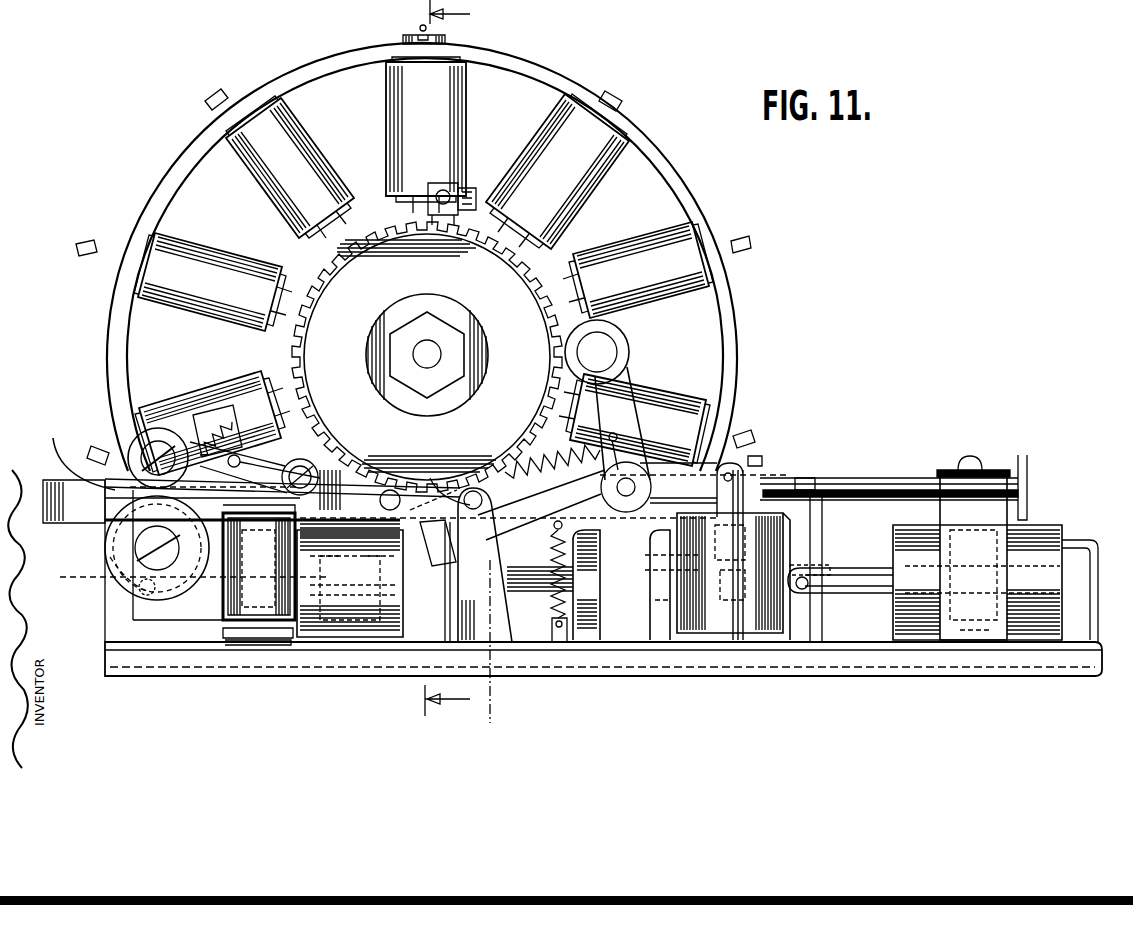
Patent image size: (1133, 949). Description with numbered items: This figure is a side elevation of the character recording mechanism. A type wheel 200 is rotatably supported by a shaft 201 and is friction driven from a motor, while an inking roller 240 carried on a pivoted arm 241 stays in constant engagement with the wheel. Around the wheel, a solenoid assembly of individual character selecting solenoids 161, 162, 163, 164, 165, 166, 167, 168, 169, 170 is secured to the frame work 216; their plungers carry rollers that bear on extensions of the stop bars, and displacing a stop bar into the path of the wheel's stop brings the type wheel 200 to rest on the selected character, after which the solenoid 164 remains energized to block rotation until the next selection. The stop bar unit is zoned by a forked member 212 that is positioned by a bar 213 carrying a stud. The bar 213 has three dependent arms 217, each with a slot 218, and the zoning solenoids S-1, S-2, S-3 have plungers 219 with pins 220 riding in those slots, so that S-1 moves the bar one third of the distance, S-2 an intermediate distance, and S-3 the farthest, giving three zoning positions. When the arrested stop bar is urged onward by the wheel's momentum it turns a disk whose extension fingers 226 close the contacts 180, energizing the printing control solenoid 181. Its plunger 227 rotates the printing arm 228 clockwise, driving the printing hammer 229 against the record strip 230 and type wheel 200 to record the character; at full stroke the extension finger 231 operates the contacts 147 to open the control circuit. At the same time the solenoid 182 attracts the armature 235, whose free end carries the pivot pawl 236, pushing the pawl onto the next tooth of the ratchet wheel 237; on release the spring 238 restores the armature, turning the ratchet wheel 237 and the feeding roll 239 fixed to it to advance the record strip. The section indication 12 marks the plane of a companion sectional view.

The section line of Fig. 12 is at (444, 361).
The frame work 216 is at (518, 63).
The solenoid 161 is at (457, 97).
The solenoid 162 is at (605, 158).
The solenoid 163 is at (657, 240).
The solenoid 164 is at (687, 395).
The solenoid 170 is at (297, 138).
The solenoid 169 is at (187, 253).
The solenoid 168 is at (260, 380).
The type wheel 200 is at (377, 250).
The shaft 201 is at (430, 352).
The contacts 180 is at (457, 185).
The extension fingers 226 is at (478, 195).
The inking roller 240 is at (628, 338).
The pivoted arm 241 is at (625, 397).
The bar 213 is at (55, 490).
The record strip 230 is at (57, 446).
The pivot pawl 236 is at (172, 445).
The spring 238 is at (207, 460).
The armature 235 is at (248, 477).
The feeding roll 239 is at (105, 535).
The ratchet wheel 237 is at (110, 557).
The solenoid 167 is at (337, 520).
The forked member 212 is at (435, 492).
The solenoid 182 is at (223, 608).
The zoning solenoid S-1 is at (347, 610).
The printing hammer 229 is at (433, 547).
The solenoid 166 is at (453, 612).
The printing arm 228 is at (673, 470).
The solenoid 165 is at (544, 552).
The zoning solenoid S-2 is at (588, 608).
The printing control solenoid 181 is at (713, 607).
The extension finger 231 is at (758, 460).
The plunger 227 is at (733, 493).
The contacts 147 is at (810, 482).
The dependent arms 217 is at (810, 535).
The slot 218 is at (800, 570).
The plunger 219 is at (875, 582).
The pin 220 is at (810, 590).
The zoning solenoid S-3 is at (920, 618).